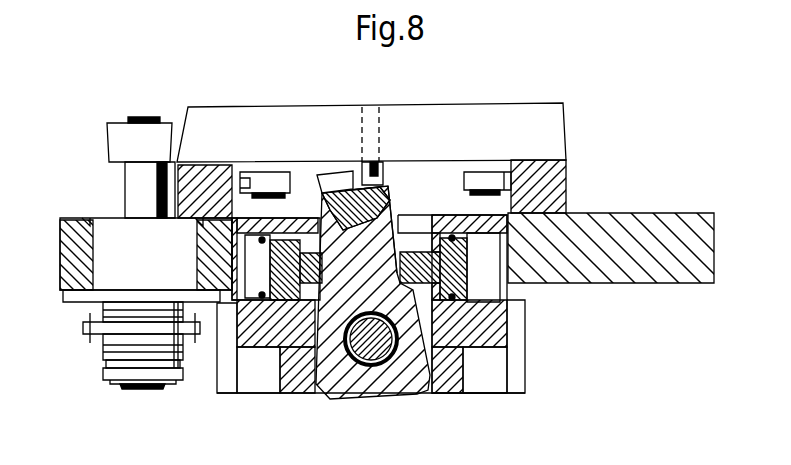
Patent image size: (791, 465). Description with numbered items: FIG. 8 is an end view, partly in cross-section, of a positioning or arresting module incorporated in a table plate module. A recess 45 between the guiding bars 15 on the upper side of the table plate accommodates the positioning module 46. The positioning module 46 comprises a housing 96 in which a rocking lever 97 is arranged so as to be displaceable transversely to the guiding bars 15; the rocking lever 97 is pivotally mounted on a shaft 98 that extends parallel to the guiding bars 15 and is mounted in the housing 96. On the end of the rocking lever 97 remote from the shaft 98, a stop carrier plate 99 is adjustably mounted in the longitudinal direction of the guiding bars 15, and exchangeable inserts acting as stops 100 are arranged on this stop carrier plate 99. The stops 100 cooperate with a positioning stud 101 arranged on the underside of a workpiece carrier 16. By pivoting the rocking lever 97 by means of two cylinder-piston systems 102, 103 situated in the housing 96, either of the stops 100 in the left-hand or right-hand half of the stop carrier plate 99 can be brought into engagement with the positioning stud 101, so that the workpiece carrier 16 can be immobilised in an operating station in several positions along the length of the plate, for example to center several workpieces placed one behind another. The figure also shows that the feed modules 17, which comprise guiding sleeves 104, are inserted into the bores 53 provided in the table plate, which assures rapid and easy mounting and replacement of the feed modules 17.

The guiding bars 15 is at (198, 193).
The workpiece carrier 16 is at (218, 128).
The feed modules 17 is at (124, 104).
The recess 45 is at (520, 245).
The positioning module 46 is at (427, 403).
The bores 53 is at (93, 244).
The housing 96 is at (485, 328).
The rocking lever 97 is at (345, 381).
The shaft 98 is at (372, 348).
The stop carrier plate 99 is at (389, 213).
The stops 100 is at (330, 181).
The positioning stud 101 is at (364, 173).
The cylinder-piston system 102 is at (278, 302).
The cylinder-piston system 103 is at (487, 261).
The guiding sleeves 104 is at (107, 268).